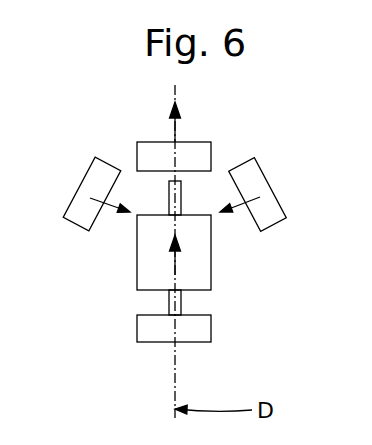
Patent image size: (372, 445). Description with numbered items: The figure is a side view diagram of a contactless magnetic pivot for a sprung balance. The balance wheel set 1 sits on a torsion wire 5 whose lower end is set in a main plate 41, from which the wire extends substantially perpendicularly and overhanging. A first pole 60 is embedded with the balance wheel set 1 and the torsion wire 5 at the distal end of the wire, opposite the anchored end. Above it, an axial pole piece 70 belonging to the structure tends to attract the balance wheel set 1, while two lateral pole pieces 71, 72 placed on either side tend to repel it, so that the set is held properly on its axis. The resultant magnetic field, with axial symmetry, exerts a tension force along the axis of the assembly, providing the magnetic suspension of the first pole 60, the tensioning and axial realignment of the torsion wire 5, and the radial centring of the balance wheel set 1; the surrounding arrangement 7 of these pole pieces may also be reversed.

The sensor arrangement 7 is at (133, 137).
The axial pole piece 70 is at (188, 148).
The lateral pole piece 71 is at (83, 191).
The lateral pole piece 72 is at (258, 183).
The first pole 60 is at (192, 193).
The balance wheel set 1 is at (219, 238).
The torsion wire 5 is at (183, 300).
The main plate 41 is at (203, 325).